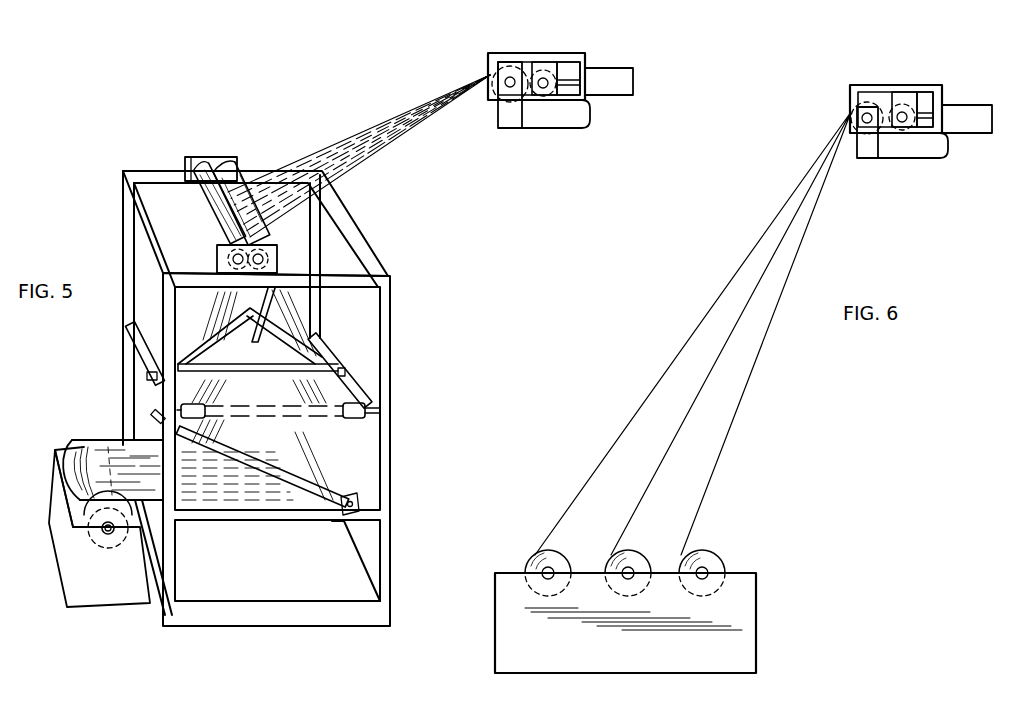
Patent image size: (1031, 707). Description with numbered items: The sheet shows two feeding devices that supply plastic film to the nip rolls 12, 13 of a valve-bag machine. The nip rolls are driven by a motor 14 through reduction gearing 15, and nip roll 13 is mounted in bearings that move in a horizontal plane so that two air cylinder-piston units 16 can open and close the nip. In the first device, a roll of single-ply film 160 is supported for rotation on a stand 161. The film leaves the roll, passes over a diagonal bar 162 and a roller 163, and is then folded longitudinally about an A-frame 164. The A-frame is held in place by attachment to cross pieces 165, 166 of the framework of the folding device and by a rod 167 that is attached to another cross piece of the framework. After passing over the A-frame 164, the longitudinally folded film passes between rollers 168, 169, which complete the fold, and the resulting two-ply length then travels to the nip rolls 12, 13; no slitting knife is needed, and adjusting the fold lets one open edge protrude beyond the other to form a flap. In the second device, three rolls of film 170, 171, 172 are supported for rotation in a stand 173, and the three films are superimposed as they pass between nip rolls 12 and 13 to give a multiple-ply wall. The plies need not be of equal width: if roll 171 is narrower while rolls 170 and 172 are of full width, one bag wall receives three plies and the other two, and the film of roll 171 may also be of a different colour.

In FIG. 5, the nip roll 12 is at (512, 66).
In FIG. 6, the nip roll 12 is at (866, 96).
In FIG. 5, the nip roll 13 is at (536, 68).
In FIG. 6, the nip roll 13 is at (888, 94).
In FIG. 5, the motor 14 is at (563, 122).
In FIG. 6, the motor 14 is at (941, 151).
In FIG. 5, the reduction gearing 15 is at (512, 124).
In FIG. 6, the reduction gearing 15 is at (868, 153).
In FIG. 5, the air cylinder-piston unit 16 is at (600, 70).
In FIG. 6, the air cylinder-piston unit 16 is at (958, 112).
In FIG. 5, the roll of single-ply film 160 is at (100, 428).
In FIG. 5, the stand 161 is at (107, 598).
In FIG. 5, the diagonal bar 162 is at (348, 500).
In FIG. 5, the roller 163 is at (358, 417).
In FIG. 5, the A-frame 164 is at (302, 352).
In FIG. 5, the cross piece 165 is at (363, 386).
In FIG. 5, the cross piece 166 is at (130, 361).
In FIG. 5, the rod 167 is at (262, 312).
In FIG. 5, the roller 168 is at (194, 162).
In FIG. 5, the roller 169 is at (229, 160).
In FIG. 6, the roll of film 170 is at (533, 558).
In FIG. 6, the roll of film 171 is at (611, 556).
In FIG. 6, the roll of film 172 is at (706, 555).
In FIG. 6, the stand 173 is at (757, 608).